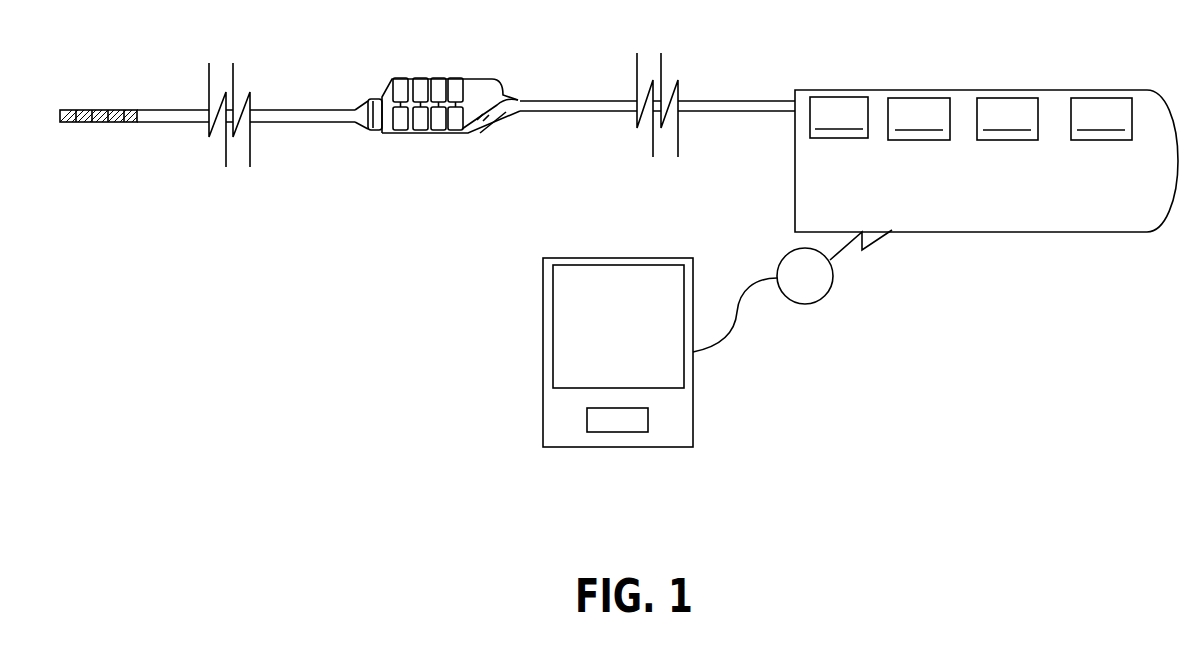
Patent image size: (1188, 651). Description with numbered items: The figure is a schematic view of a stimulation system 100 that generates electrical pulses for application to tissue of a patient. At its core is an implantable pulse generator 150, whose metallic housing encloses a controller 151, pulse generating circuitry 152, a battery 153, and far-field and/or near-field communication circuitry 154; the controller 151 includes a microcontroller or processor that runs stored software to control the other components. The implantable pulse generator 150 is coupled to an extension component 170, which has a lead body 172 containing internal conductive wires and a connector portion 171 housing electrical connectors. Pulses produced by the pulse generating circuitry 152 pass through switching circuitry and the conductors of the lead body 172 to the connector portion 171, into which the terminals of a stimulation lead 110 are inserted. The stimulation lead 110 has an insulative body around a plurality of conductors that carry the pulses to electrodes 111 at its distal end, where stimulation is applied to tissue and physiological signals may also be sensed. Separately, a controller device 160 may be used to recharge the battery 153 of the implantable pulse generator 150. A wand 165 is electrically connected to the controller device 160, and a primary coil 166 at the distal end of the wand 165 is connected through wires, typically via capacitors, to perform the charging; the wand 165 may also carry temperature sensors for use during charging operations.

The stimulation system 100 is at (352, 337).
The stimulation lead 110 is at (160, 124).
The electrodes 111 is at (103, 124).
The implantable pulse generator 150 is at (1005, 232).
The controller 151 is at (839, 117).
The pulse generating circuitry 152 is at (919, 119).
The battery 153 is at (1007, 119).
The communication circuitry 154 is at (1101, 119).
The controller device 160 is at (655, 258).
The wand 165 is at (748, 288).
The coil 166 is at (805, 304).
The extension component 170 is at (516, 80).
The connector portion 171 is at (437, 77).
The lead body 172 is at (541, 110).